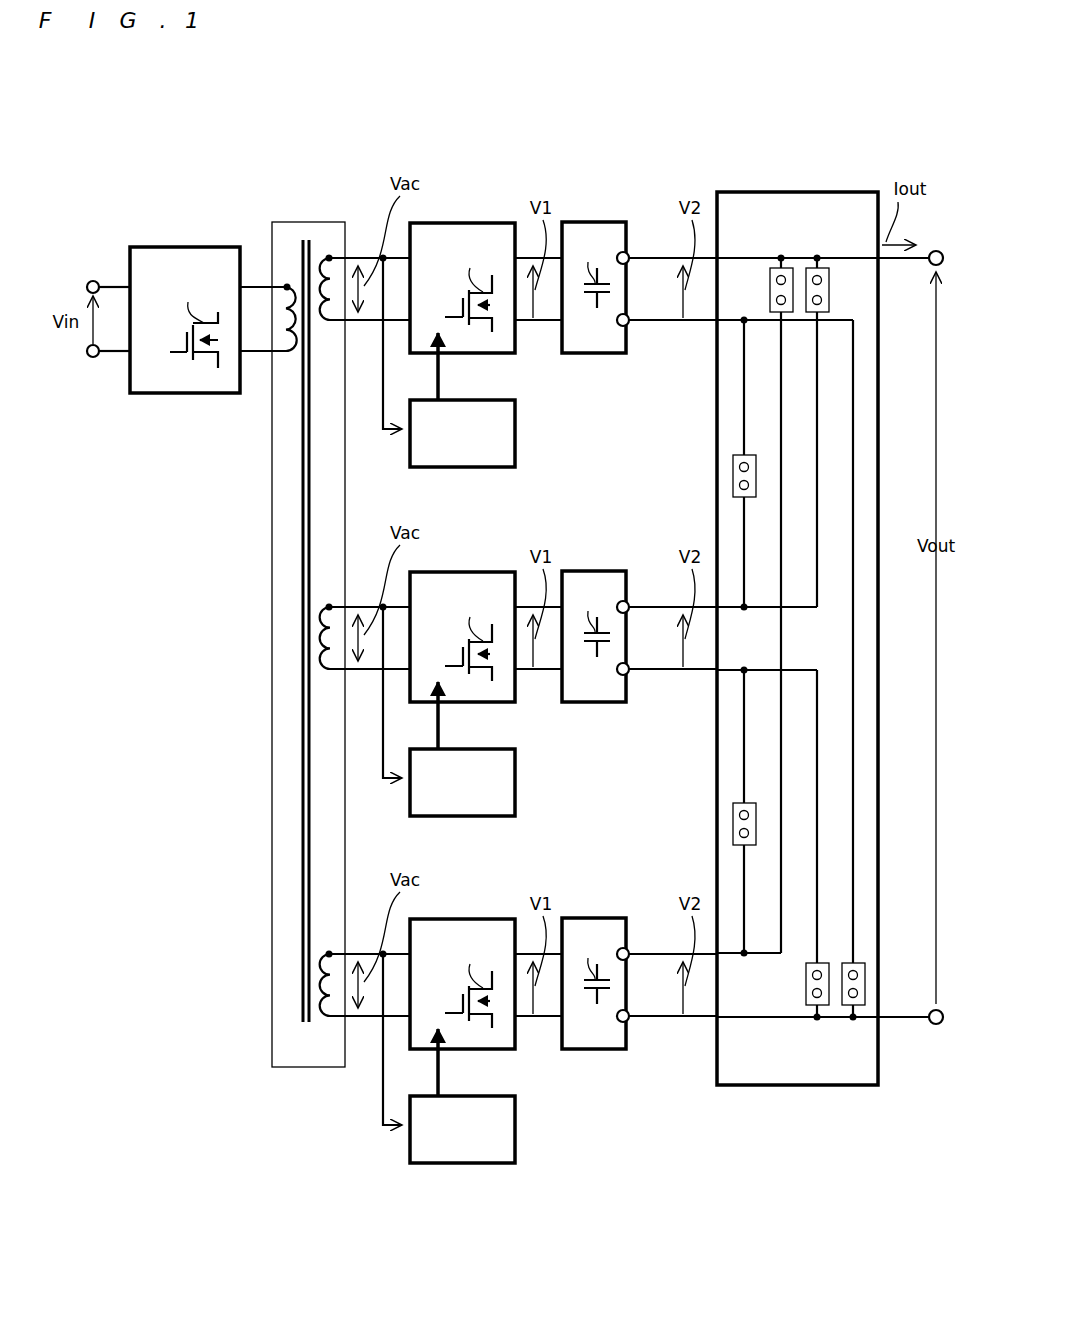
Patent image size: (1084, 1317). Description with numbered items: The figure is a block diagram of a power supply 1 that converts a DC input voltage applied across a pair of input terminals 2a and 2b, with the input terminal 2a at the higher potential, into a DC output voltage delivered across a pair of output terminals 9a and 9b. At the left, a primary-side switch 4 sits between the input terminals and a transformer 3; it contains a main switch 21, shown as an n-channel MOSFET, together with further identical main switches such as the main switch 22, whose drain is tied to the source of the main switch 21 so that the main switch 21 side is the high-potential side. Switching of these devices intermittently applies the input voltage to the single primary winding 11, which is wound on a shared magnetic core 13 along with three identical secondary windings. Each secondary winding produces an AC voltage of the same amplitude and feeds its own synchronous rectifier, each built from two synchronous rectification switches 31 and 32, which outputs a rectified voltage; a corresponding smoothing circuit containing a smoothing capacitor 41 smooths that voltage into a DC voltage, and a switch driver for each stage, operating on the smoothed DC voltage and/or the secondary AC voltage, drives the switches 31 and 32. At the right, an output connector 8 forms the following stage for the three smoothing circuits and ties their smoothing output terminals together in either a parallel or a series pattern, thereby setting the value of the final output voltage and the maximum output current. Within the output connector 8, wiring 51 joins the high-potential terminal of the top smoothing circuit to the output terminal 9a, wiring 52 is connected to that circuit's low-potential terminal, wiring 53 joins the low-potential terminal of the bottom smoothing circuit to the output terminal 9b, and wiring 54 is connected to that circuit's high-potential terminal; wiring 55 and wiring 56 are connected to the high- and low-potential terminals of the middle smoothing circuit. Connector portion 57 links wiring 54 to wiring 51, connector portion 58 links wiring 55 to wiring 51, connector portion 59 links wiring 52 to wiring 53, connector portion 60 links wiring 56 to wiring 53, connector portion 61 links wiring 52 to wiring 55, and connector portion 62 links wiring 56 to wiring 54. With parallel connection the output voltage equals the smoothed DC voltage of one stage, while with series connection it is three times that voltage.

The power supply 1 is at (479, 150).
The input terminal 2a is at (93, 280).
The input terminal 2b is at (93, 358).
The transformer 3 is at (280, 617).
The primary-side switch 4 is at (185, 292).
The primary winding 11 is at (283, 284).
The magnetic core 13 is at (303, 434).
The main switch 21 is at (178, 266).
The main switch 22 is at (185, 325).
The synchronous rectification switch 31 is at (431, 224).
The synchronous rectification switch 32 is at (462, 637).
The smoothing capacitor 41 is at (580, 224).
The output connector 8 is at (822, 191).
The output terminal 9a is at (936, 250).
The output terminal 9b is at (936, 1025).
The wiring 51 is at (740, 258).
The wiring 52 is at (744, 318).
The wiring 53 is at (742, 1020).
The wiring 54 is at (742, 956).
The wiring 55 is at (736, 610).
The wiring 56 is at (732, 668).
The connector portion 57 is at (788, 270).
The connector portion 58 is at (826, 270).
The connector portion 59 is at (852, 1010).
The connector portion 60 is at (814, 1010).
The connector portion 61 is at (748, 455).
The connector portion 62 is at (748, 803).